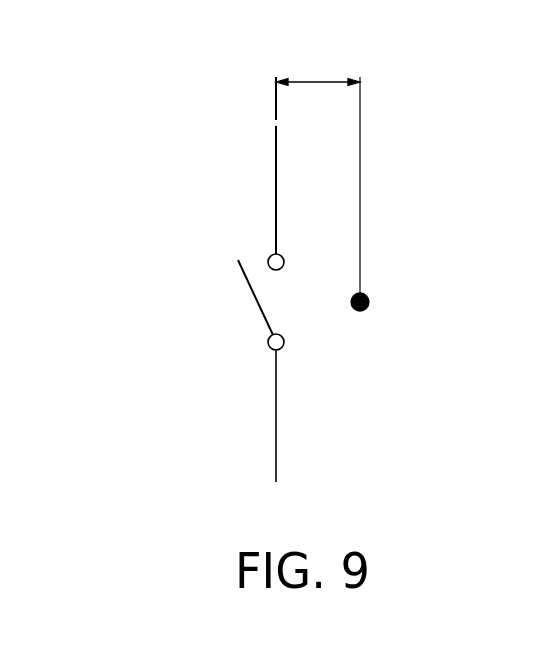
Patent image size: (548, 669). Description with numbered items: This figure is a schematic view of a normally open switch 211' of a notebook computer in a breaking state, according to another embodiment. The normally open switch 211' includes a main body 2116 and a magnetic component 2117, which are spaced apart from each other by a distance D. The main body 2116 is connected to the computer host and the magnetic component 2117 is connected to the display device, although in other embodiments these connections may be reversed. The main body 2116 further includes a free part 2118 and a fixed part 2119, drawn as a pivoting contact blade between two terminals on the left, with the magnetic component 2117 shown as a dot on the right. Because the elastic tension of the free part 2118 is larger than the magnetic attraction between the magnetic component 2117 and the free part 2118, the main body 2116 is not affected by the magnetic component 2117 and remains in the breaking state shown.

The normally open switch 211' is at (246, 250).
The main body 2116 is at (105, 244).
The magnetic component 2117 is at (375, 302).
The free part 2118 is at (229, 262).
The fixed part 2119 is at (243, 343).